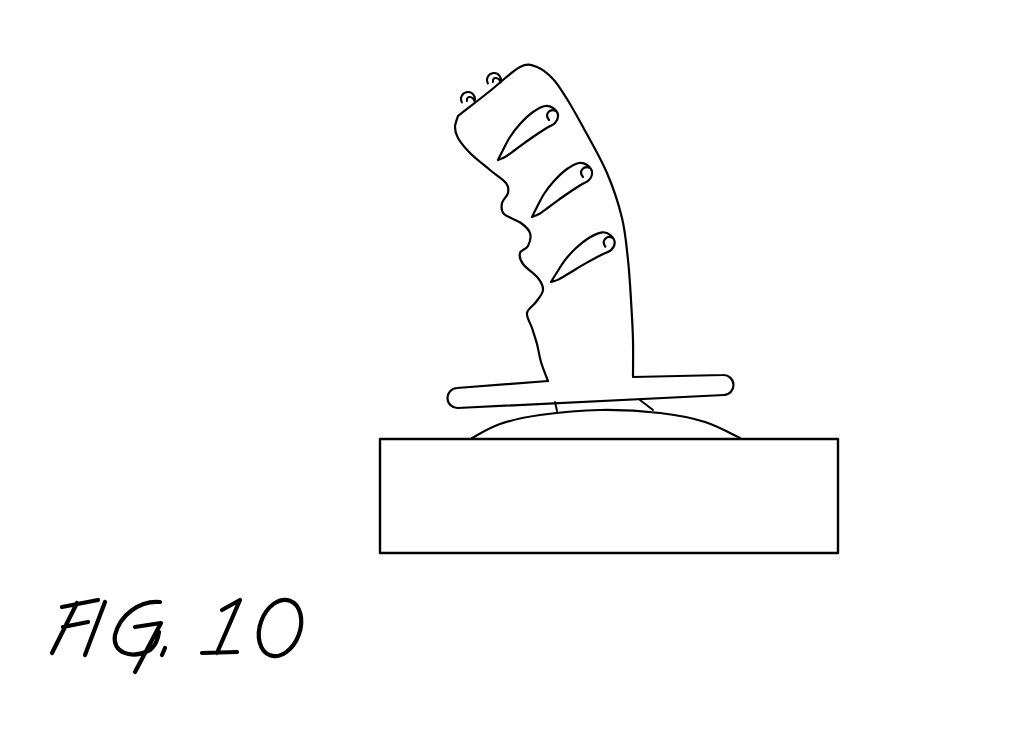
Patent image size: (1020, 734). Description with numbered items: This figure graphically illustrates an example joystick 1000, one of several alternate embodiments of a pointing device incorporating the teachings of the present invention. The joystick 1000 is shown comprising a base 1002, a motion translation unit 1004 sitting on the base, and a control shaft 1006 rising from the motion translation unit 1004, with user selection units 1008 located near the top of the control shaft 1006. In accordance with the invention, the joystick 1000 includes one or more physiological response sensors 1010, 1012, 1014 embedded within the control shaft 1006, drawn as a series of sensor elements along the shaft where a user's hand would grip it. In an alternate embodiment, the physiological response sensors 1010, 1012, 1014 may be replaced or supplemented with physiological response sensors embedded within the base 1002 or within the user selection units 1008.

The joystick 1000 is at (266, 119).
The base 1002 is at (823, 493).
The motion translation unit 1004 is at (701, 422).
The control shaft 1006 is at (618, 322).
The user selection units 1008 is at (462, 92).
The physiological response sensor 1010 is at (545, 113).
The physiological response sensor 1012 is at (582, 173).
The physiological response sensor 1014 is at (605, 242).